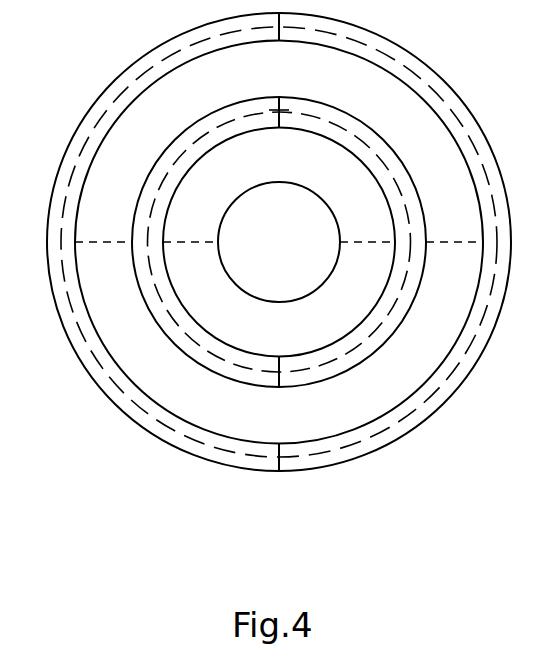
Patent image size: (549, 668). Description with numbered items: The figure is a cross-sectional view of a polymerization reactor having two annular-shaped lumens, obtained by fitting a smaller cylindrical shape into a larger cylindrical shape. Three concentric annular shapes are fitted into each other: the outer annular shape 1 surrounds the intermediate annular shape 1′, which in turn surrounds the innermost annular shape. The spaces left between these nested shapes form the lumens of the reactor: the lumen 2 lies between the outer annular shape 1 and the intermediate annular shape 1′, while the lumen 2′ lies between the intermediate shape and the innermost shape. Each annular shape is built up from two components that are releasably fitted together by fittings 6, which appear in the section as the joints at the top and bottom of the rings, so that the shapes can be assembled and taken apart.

The annular shape 1 is at (258, 470).
The annular shape 1′ is at (220, 378).
The lumen 2 is at (240, 415).
The lumen 2′ is at (222, 323).
The fitting 6 is at (279, 458).